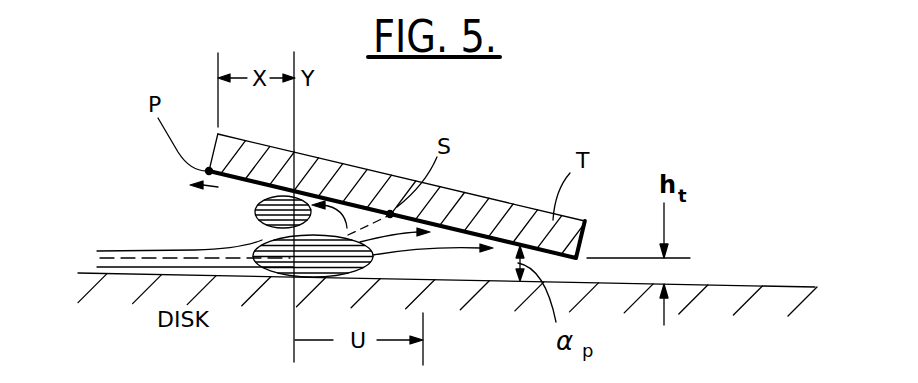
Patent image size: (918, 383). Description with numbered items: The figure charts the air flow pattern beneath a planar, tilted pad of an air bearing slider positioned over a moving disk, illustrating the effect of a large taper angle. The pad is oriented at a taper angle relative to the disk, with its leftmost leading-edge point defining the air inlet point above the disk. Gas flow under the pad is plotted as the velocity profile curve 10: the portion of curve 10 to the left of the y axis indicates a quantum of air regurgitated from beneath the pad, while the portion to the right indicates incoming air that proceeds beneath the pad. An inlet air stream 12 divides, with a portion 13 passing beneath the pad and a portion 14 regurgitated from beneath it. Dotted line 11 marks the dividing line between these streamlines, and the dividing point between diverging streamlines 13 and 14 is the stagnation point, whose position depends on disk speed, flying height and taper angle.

The velocity profile curve 10 is at (255, 214).
The dividing line 11 is at (187, 258).
The inlet air stream 12 is at (117, 249).
The portion passing beneath pad 13 is at (443, 250).
The regurgitated portion 14 is at (212, 188).